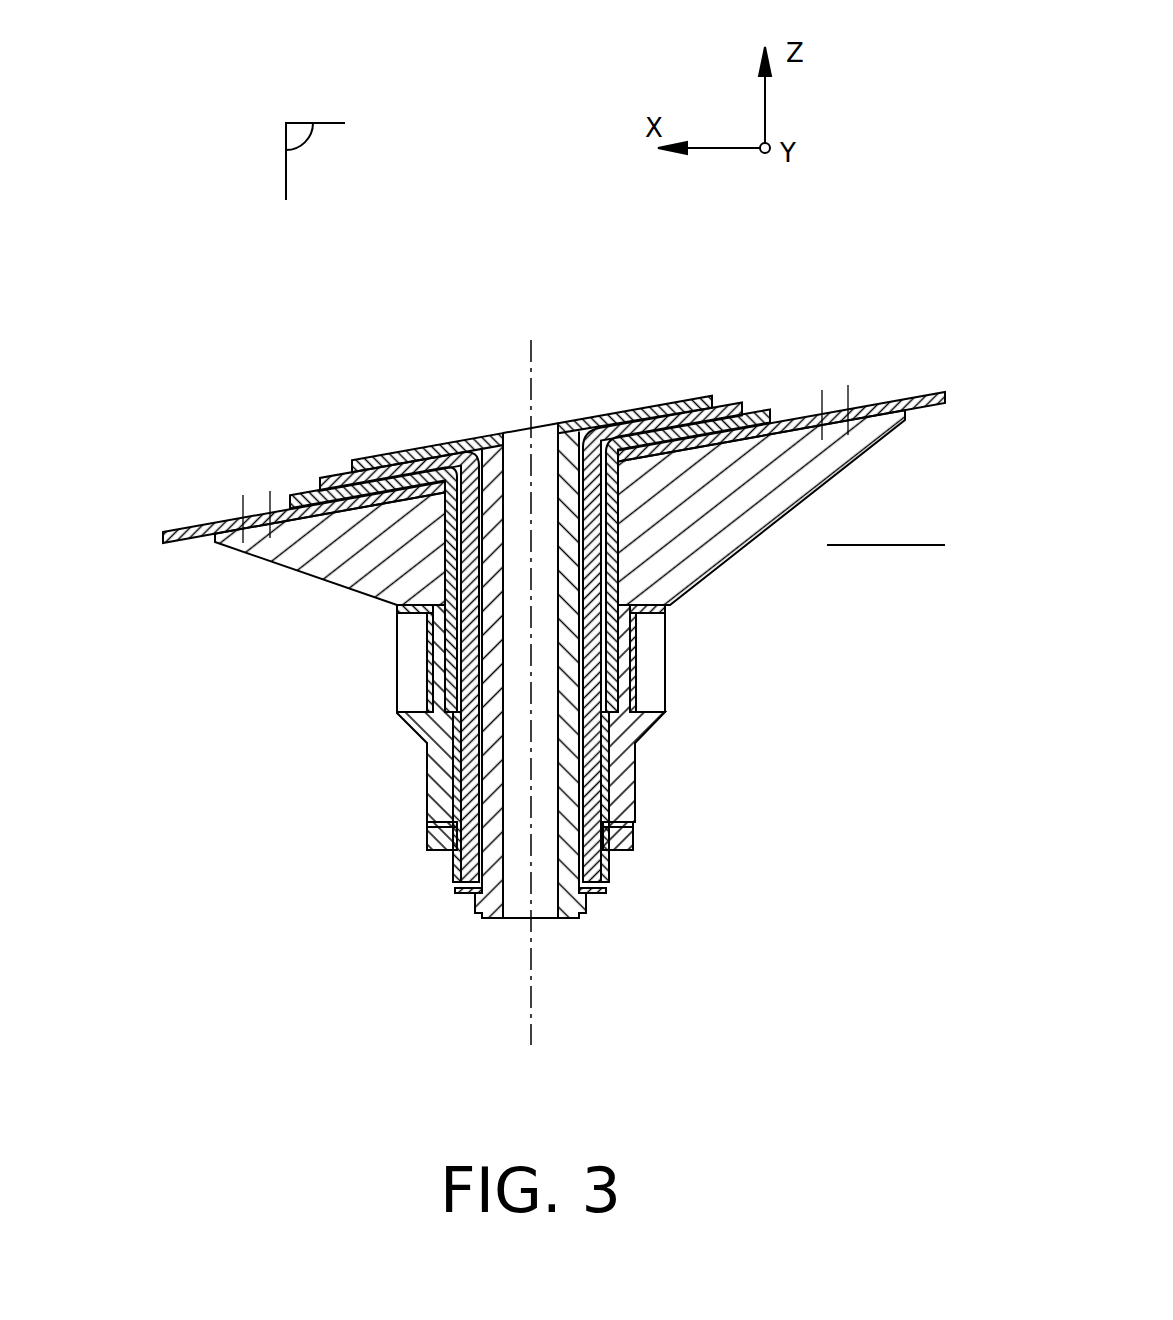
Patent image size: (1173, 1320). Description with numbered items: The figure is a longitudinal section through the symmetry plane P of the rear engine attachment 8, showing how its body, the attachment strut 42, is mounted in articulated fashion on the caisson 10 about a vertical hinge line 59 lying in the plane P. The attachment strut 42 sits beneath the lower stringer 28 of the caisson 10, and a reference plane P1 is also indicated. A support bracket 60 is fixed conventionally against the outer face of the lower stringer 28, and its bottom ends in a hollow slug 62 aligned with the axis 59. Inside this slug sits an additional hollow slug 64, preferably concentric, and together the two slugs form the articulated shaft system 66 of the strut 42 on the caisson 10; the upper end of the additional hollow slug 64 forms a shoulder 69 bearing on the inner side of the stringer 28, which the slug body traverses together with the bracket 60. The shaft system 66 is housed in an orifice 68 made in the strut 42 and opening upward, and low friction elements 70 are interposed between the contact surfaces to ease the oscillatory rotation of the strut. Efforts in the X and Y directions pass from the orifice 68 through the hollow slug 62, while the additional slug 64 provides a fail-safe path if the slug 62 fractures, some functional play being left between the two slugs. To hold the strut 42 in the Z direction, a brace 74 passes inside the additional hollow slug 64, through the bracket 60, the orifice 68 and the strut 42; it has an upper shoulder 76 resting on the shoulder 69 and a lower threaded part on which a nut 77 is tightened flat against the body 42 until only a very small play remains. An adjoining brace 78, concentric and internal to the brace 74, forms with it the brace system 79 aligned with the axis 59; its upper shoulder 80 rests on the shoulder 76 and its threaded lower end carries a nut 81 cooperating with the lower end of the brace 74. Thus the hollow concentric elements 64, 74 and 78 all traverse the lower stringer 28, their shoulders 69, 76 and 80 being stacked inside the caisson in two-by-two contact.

The rear engine attachment 8 is at (790, 312).
The caisson 10 is at (183, 514).
The lower stringer 28 is at (238, 518).
The attachment strut 42 is at (640, 780).
The hinge line 59 is at (533, 1017).
The support bracket 60 is at (258, 563).
The hollow slug 62 is at (432, 704).
The additional hollow slug 64 is at (452, 713).
The articulated shaft system 66 is at (438, 743).
The orifice 68 is at (632, 696).
The shoulder 69 is at (308, 495).
The low friction elements 70 is at (430, 640).
The brace 74 is at (596, 782).
The shoulder 76 is at (340, 480).
The nut 77 is at (432, 850).
The adjoining brace 78 is at (578, 872).
The brace system 79 is at (623, 679).
The shoulder 80 is at (440, 455).
The nut 81 is at (472, 893).
The symmetry plane P is at (302, 123).
The plane P1 is at (900, 545).